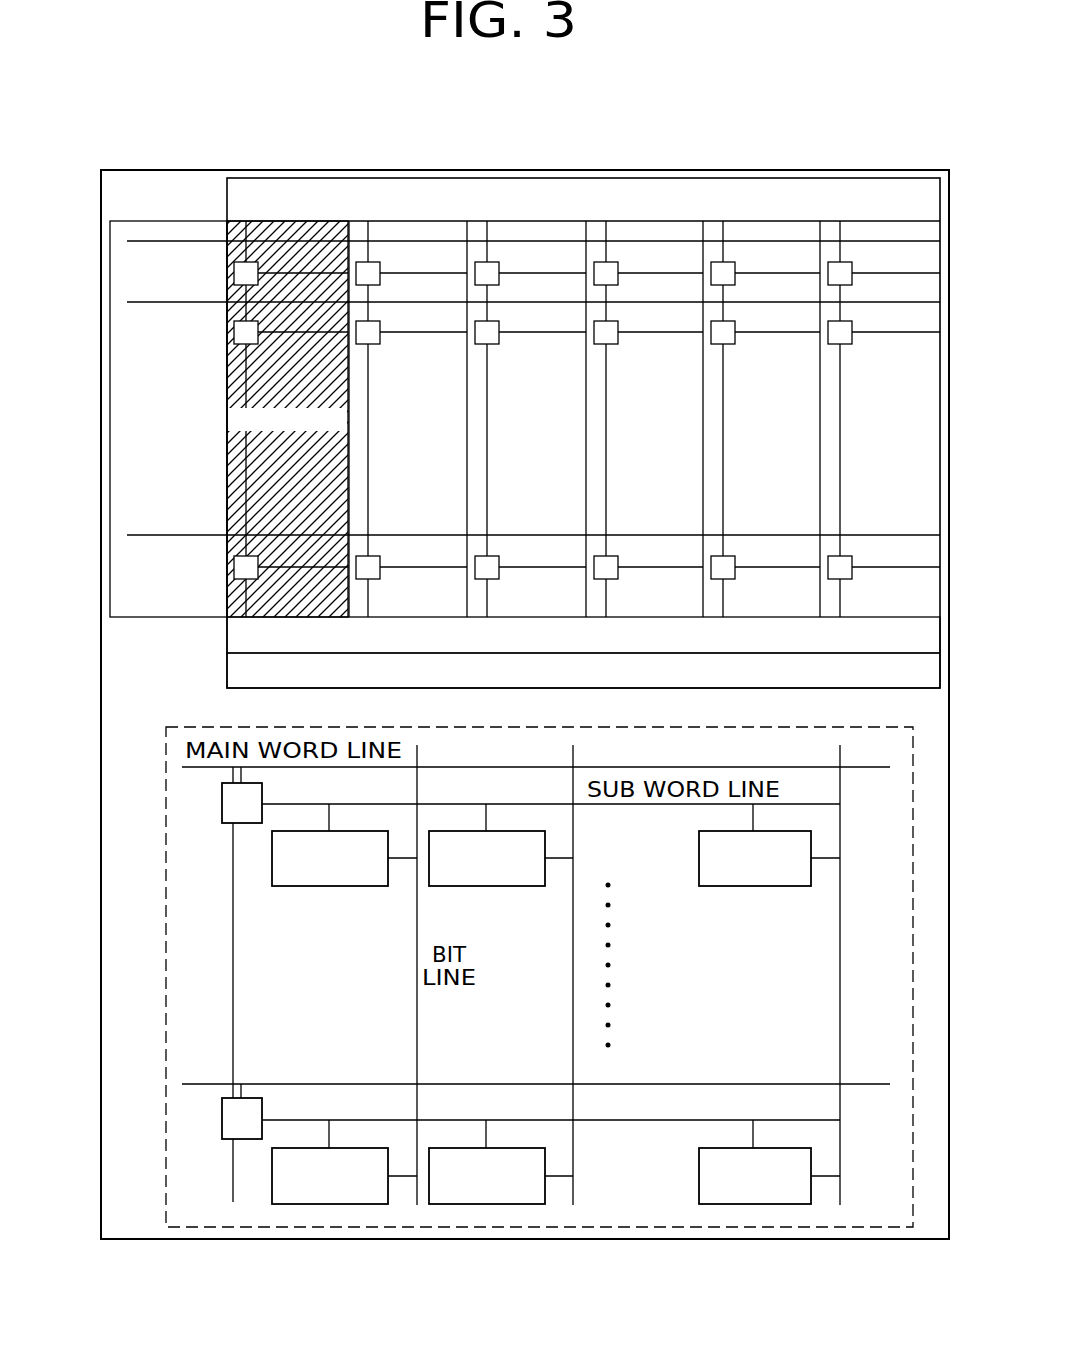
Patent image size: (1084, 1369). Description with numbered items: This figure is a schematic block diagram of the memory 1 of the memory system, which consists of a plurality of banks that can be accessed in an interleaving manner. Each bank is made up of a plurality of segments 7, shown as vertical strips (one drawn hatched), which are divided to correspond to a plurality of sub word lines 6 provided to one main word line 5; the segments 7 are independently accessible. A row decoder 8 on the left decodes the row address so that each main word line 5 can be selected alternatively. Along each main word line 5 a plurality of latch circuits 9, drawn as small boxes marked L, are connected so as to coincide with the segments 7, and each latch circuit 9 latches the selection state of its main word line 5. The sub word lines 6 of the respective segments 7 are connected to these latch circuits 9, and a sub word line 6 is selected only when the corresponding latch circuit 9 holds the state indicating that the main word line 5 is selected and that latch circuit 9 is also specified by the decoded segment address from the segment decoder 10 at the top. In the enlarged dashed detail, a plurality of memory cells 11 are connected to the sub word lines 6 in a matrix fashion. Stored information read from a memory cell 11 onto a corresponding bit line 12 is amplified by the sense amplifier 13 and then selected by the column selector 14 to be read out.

The memory 1 is at (184, 170).
The segment decoder 10 is at (440, 178).
The main word line 5 is at (155, 241).
The sub word line 6 is at (425, 333).
The segment 7 is at (348, 437).
The row decoder 8 is at (155, 617).
The latch circuit 9 is at (234, 272).
The memory cell 11 is at (326, 886).
The bit line 12 is at (417, 1045).
The sense amplifier 13 is at (227, 633).
The column selector 14 is at (227, 688).